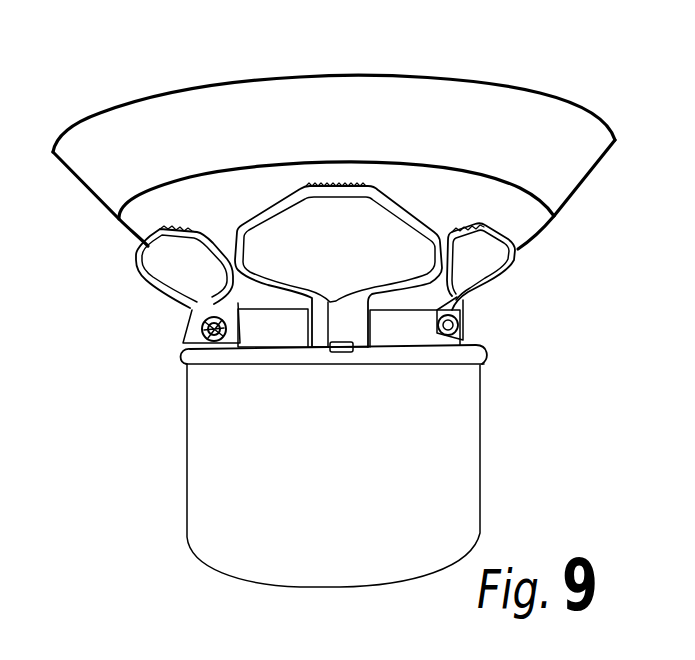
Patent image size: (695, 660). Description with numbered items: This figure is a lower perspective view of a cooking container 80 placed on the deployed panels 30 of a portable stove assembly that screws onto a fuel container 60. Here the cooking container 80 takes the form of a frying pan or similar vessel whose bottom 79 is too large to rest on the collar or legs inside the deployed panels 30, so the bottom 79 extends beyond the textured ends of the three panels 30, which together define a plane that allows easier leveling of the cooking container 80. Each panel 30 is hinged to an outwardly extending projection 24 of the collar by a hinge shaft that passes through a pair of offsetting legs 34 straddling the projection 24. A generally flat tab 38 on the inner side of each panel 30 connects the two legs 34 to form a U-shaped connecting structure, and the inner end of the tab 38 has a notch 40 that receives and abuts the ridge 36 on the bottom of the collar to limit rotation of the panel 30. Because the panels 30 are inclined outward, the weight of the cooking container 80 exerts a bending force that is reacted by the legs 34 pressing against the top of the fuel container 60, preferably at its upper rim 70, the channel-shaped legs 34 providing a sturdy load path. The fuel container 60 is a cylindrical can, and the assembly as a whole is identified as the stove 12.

The cooking container 80 is at (467, 108).
The bottom 79 is at (505, 201).
The panel 30 is at (143, 274).
The legs 34 is at (195, 320).
The projection 24 is at (263, 332).
The container assembly 12 is at (250, 370).
The upper rim 70 is at (263, 363).
The ridge 36 is at (340, 355).
The tab 38 is at (345, 316).
The notch 40 is at (343, 340).
The fuel container 60 is at (483, 443).